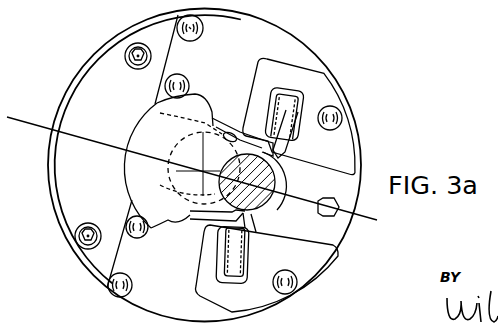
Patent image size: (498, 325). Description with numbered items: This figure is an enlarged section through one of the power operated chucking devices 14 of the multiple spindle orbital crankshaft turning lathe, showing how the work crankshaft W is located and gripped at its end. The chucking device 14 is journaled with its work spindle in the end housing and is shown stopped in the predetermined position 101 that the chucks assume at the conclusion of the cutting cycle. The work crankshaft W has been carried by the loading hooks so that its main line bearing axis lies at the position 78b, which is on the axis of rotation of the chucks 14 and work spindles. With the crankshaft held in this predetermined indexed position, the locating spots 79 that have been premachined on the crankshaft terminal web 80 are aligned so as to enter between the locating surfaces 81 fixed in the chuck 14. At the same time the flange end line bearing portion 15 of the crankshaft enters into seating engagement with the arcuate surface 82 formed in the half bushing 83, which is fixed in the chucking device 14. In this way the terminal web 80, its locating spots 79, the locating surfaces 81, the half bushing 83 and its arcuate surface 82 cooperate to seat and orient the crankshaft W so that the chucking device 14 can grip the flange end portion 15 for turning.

The predetermined position 101 is at (52, 125).
The chucking device 14 is at (313, 265).
The flange end portion 15 is at (174, 182).
The position on the axis of rotation of the chucks 78b is at (201, 167).
The locating spots 79 is at (279, 150).
The crankshaft terminal web 80 is at (150, 133).
The locating surfaces 81 is at (278, 173).
The arcuate surface 82 is at (182, 222).
The half bushing 83 is at (229, 128).
The work crankshaft W is at (129, 171).